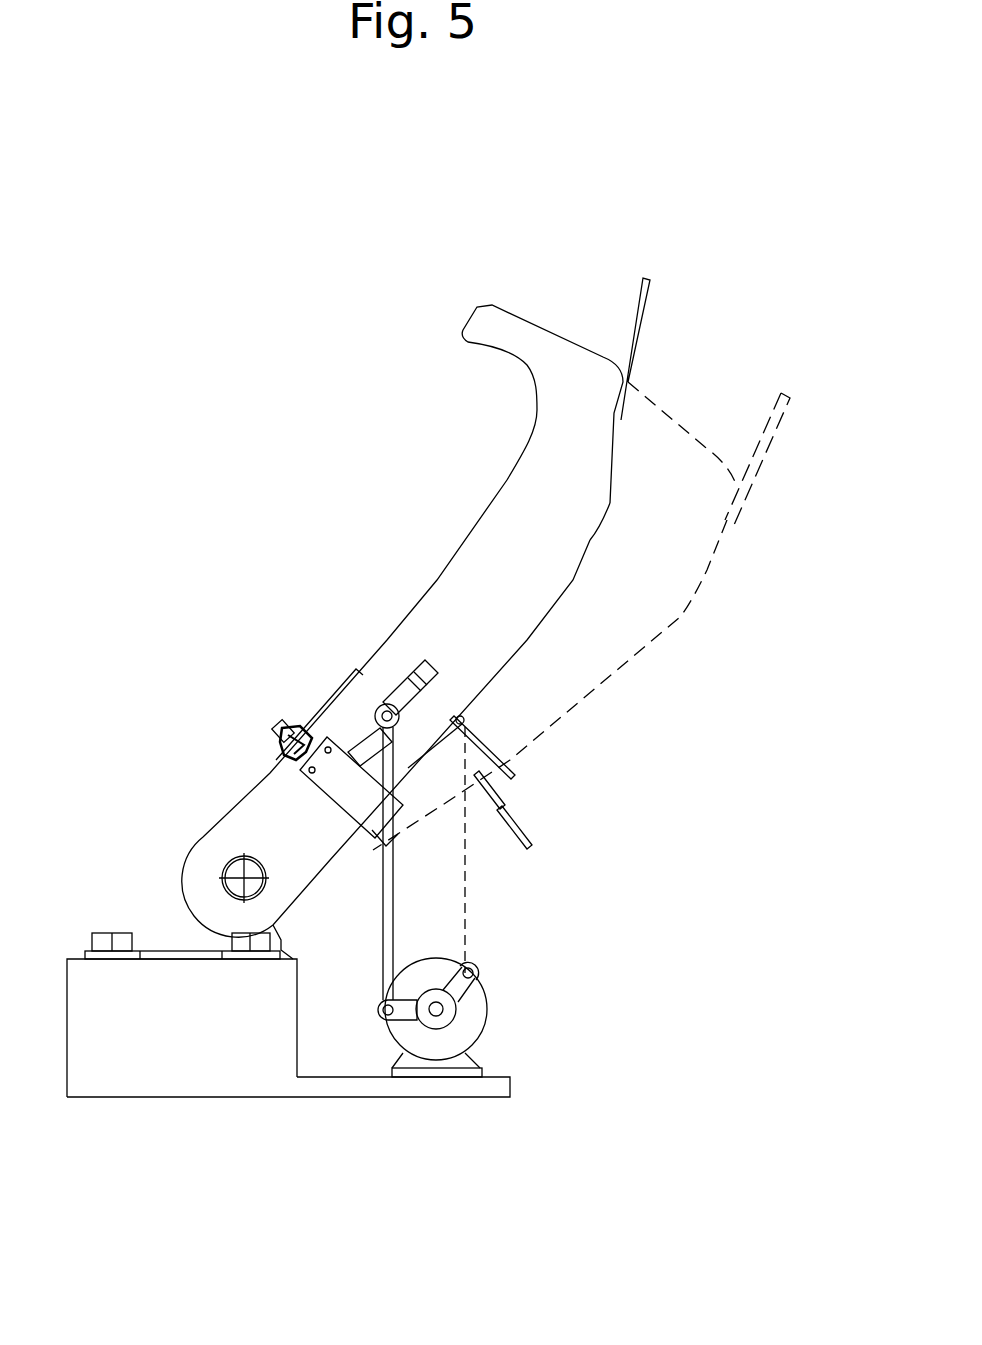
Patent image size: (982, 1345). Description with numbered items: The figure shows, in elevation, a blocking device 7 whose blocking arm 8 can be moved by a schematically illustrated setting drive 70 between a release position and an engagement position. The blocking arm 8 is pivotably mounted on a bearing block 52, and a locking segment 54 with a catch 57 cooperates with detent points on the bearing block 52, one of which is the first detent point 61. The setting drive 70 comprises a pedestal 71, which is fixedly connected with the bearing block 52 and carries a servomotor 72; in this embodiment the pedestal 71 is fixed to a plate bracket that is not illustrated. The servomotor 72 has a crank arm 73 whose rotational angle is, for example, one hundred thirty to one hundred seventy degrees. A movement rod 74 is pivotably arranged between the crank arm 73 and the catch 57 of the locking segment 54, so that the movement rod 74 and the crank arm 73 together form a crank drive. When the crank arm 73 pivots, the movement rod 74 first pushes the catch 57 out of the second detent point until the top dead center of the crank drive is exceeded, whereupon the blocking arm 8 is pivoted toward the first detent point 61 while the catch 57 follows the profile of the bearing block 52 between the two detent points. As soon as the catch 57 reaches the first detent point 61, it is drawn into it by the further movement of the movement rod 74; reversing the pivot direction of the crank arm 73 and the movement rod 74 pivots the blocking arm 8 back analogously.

The blocking device 7 is at (430, 513).
The blocking arm 8 is at (540, 497).
The locking segment 54 is at (652, 318).
The catch 57 is at (403, 704).
The first detent point 61 is at (437, 752).
The bearing block 52 is at (178, 897).
The movement rod 74 is at (393, 893).
The crank arm 73 is at (452, 1010).
The servomotor 72 is at (465, 1033).
The pedestal 71 is at (145, 1063).
The setting drive 70 is at (428, 1120).